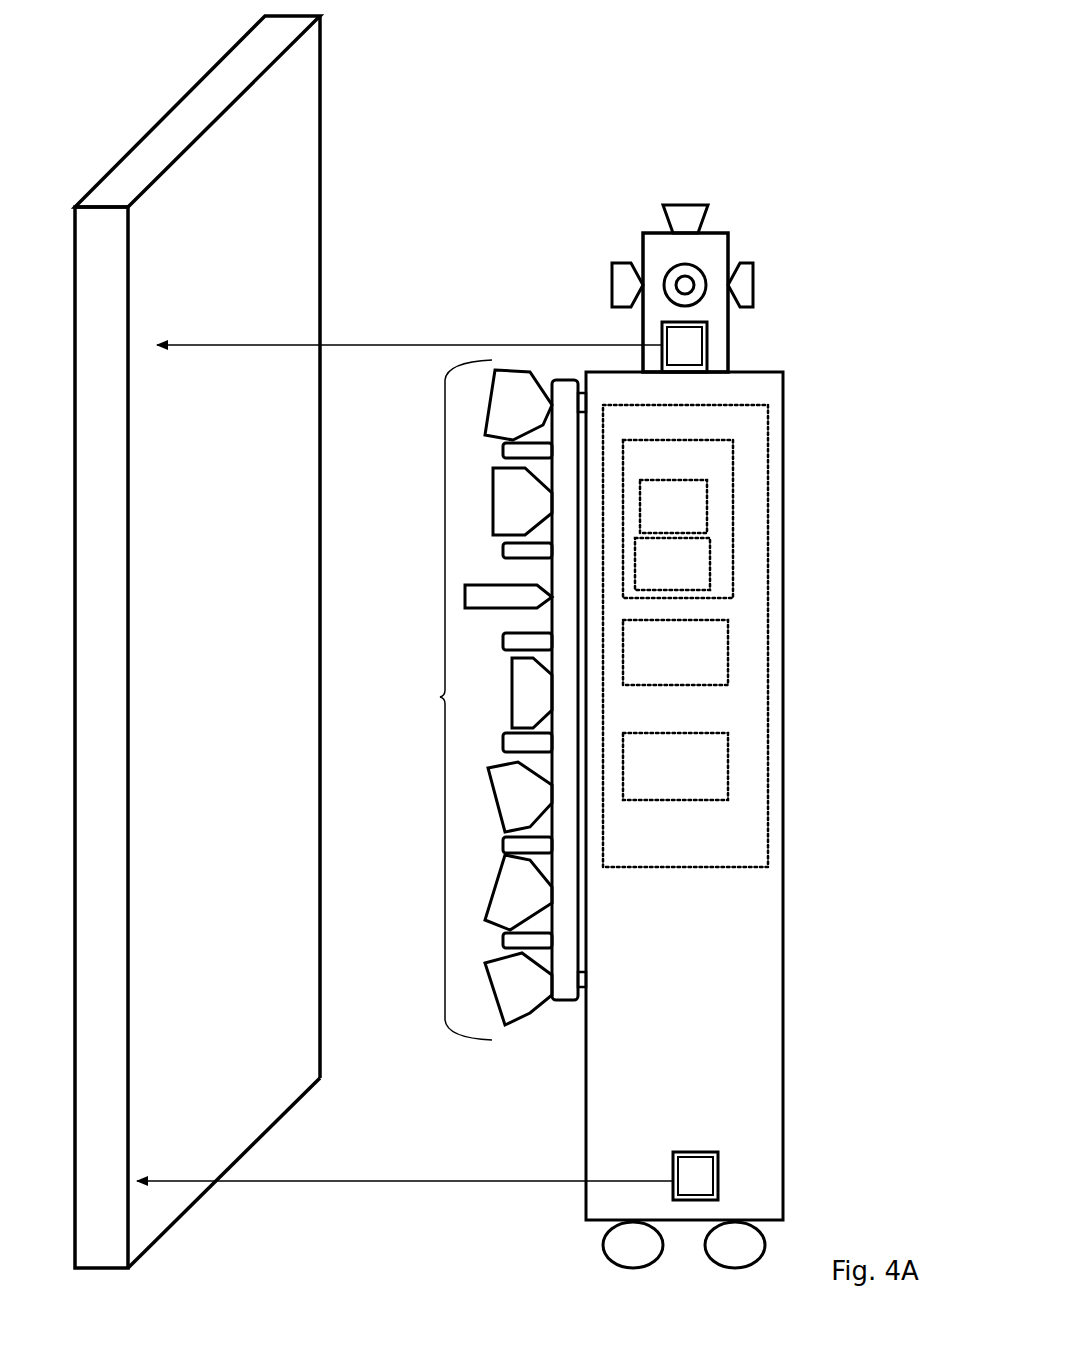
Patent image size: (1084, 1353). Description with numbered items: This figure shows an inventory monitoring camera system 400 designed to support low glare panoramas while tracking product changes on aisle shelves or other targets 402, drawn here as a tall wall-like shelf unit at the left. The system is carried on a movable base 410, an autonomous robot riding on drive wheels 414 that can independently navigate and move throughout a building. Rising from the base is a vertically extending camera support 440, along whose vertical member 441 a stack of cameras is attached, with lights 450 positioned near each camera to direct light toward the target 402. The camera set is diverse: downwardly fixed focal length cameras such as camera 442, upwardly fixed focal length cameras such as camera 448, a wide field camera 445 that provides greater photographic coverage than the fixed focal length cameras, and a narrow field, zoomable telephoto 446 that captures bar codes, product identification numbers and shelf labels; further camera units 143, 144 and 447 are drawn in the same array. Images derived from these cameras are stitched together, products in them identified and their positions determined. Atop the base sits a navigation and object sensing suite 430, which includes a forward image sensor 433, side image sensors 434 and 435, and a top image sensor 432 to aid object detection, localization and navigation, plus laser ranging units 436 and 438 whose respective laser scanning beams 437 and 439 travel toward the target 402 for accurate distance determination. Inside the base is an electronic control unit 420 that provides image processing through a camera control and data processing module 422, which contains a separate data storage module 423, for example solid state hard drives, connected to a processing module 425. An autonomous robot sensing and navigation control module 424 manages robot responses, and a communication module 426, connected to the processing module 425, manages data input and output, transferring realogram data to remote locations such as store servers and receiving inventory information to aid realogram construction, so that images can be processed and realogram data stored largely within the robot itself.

The inventory monitoring camera system 400 is at (749, 86).
The target 402 is at (332, 105).
The movable base 410 is at (788, 959).
The drive wheels 414 is at (589, 1252).
The electronic control unit 420 is at (717, 432).
The camera control and data processing module 422 is at (654, 474).
The data storage module 423 is at (654, 520).
The autonomous robot sensing and navigation control module 424 is at (652, 662).
The processing module 425 is at (654, 574).
The communication module 426 is at (652, 777).
The navigation and object sensing suite 430 is at (752, 189).
The top image sensor 432 is at (672, 228).
The forward image sensor 433 is at (702, 268).
The side image sensor 434 is at (757, 280).
The side image sensor 435 is at (611, 294).
The laser ranging unit 436 is at (671, 355).
The laser scanning beam 437 is at (397, 341).
The laser ranging unit 438 is at (682, 1186).
The laser scanning beam 439 is at (387, 1177).
The vertically extending camera support 440 is at (440, 697).
The mounting rail 441 is at (562, 1004).
The downwardly fixed focal length camera 442 is at (501, 994).
The nozzle 143 is at (504, 905).
The nozzle 144 is at (507, 803).
The wide field camera 445 is at (516, 699).
The narrow field zoomable telephoto 446 is at (499, 605).
The nozzle 447 is at (504, 510).
The upwardly fixed focal length camera 448 is at (503, 411).
The lights 450 is at (481, 940).